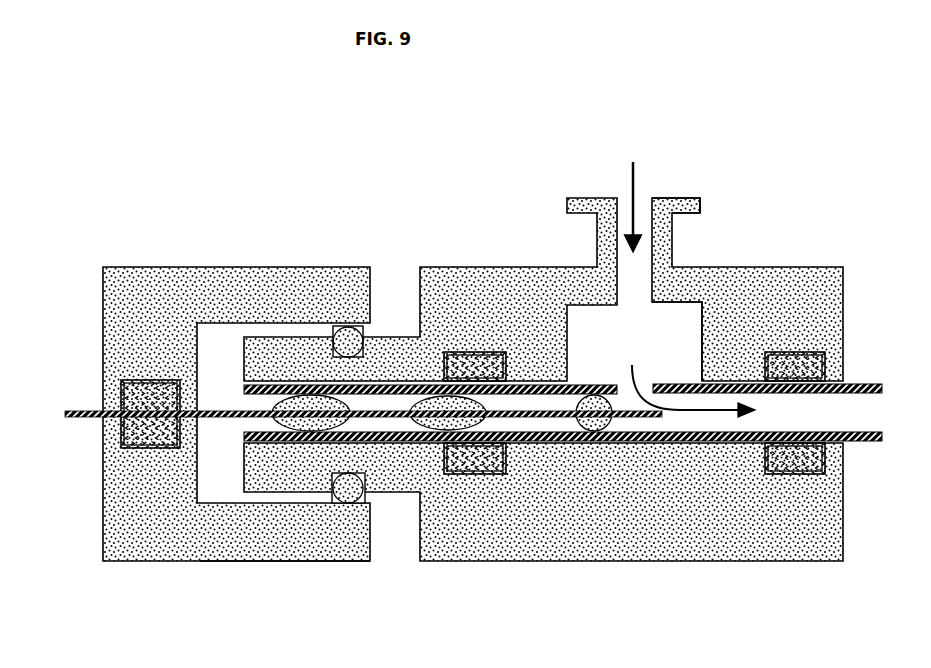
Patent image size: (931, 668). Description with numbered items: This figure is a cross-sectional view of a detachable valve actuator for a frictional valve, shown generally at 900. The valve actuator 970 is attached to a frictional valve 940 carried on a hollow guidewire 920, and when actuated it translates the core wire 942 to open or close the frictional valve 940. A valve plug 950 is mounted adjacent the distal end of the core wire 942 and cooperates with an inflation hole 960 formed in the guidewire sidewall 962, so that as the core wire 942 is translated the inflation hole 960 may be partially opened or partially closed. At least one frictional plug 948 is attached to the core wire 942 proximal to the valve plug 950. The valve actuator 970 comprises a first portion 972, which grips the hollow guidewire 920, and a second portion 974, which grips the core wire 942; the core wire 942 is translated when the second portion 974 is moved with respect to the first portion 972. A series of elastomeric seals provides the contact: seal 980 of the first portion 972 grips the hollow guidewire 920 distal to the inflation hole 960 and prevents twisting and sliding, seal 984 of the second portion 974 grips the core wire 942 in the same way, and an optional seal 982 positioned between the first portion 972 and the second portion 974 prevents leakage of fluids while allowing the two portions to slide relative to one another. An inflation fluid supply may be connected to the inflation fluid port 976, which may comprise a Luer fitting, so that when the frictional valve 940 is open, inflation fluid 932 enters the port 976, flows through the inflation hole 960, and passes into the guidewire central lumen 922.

The detachable valve actuator for a frictional valve 900 is at (158, 130).
The valve actuator 970 is at (196, 242).
The second portion 974 is at (307, 563).
The frictional valve 940 is at (292, 243).
The first portion 972 is at (717, 562).
The inflation hole 960 is at (642, 382).
The inflation fluid port 976 is at (677, 198).
The guidewire sidewall 962 is at (685, 382).
The seal 982 is at (350, 502).
The seal 980 is at (488, 472).
The seal 984 is at (152, 447).
The guidewire central lumen 922 is at (868, 415).
The hollow guidewire 920 is at (855, 442).
The frictional plug 948 is at (272, 420).
The valve plug 950 is at (613, 423).
The core wire 942 is at (82, 417).
The inflation fluid 932 is at (637, 177).